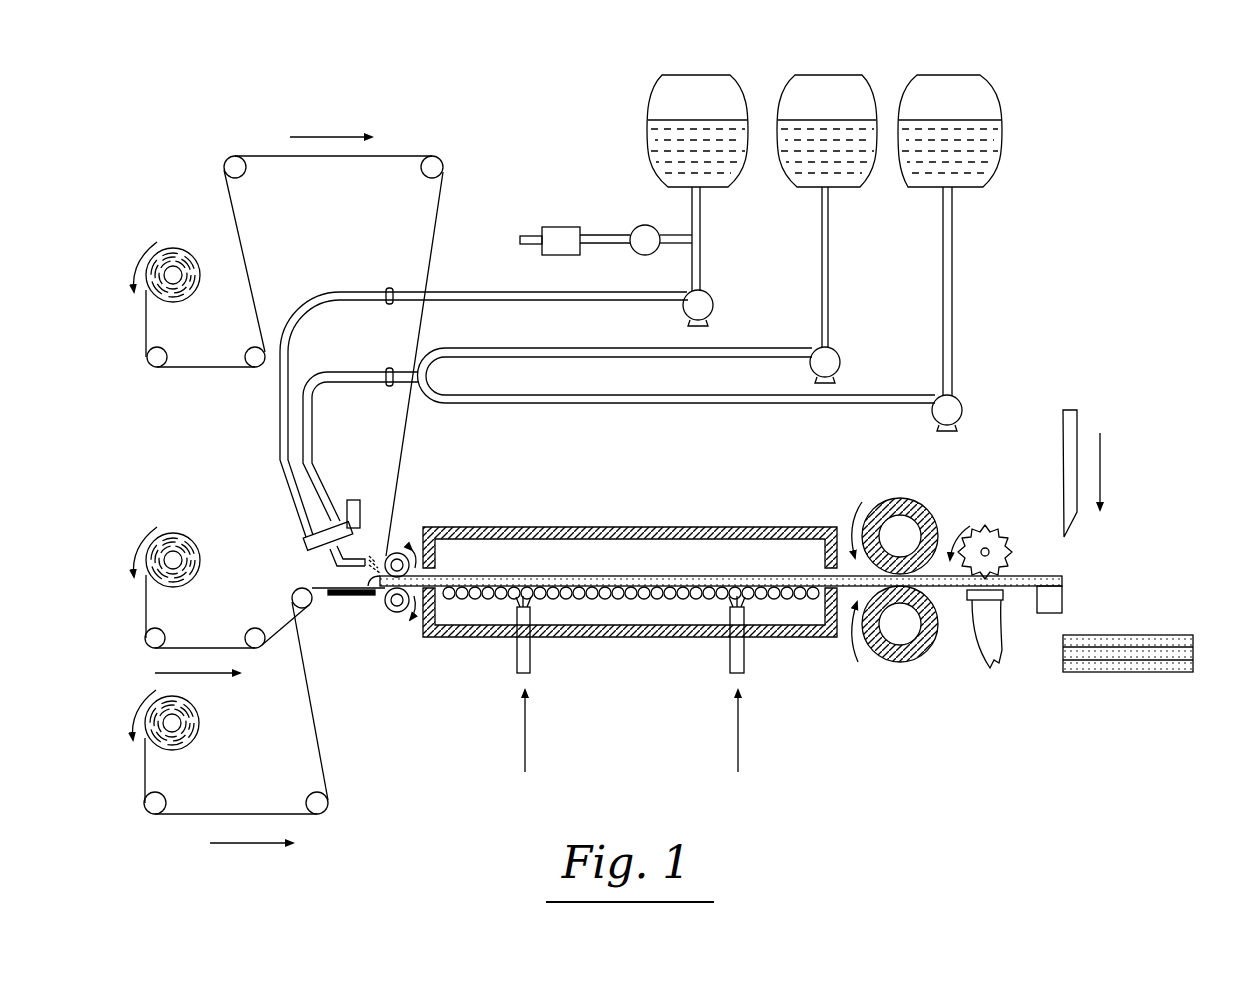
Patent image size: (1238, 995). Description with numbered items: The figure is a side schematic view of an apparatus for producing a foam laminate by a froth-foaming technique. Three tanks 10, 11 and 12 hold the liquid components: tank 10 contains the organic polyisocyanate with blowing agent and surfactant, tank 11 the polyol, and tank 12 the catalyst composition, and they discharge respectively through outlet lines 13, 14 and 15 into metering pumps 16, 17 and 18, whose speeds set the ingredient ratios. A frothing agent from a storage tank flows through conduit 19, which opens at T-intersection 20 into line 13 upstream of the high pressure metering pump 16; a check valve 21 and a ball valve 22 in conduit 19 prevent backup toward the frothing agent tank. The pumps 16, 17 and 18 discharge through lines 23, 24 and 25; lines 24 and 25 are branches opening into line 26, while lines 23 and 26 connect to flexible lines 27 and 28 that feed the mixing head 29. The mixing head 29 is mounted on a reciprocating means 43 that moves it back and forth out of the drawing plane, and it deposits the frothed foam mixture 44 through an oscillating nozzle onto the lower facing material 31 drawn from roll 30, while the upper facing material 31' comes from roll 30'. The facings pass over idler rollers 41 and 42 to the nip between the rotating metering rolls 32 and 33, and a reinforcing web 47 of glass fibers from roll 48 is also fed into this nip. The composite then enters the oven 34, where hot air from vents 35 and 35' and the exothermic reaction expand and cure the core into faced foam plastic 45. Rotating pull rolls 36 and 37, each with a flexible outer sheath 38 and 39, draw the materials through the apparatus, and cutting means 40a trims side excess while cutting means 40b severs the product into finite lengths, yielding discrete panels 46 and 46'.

The tank 10 is at (683, 77).
The tank 11 is at (828, 78).
The tank 12 is at (965, 78).
The outlet line 13 is at (701, 215).
The polyol line 14 is at (829, 232).
The outlet line 15 is at (953, 255).
The metering pump 16 is at (708, 306).
The metering pump 17 is at (838, 357).
The metering pump 18 is at (961, 407).
The conduit 19 is at (614, 245).
The T-intersection 20 is at (698, 243).
The check valve 21 is at (562, 226).
The ball valve 22 is at (644, 224).
The line 23 is at (437, 301).
The line 24 is at (548, 362).
The line 25 is at (690, 406).
The line 26 is at (430, 374).
The flexible line 27 is at (338, 292).
The flexible line 28 is at (325, 386).
The mixing head 29 is at (302, 535).
The roll of lower facing material 30 is at (190, 720).
The roll of upper facing material 30' is at (199, 304).
The lower facing material 31 is at (236, 722).
The upper facing material 31' is at (347, 346).
The metering roll 32 is at (388, 612).
The metering roll 33 is at (403, 551).
The oven 34 is at (606, 527).
The vent 35 is at (550, 684).
The vent 35' is at (767, 684).
The pull roll 36 is at (900, 632).
The pull roll 37 is at (902, 530).
The flexible outer sheath 38 is at (910, 650).
The flexible outer sheath 39 is at (883, 492).
The cutting means 40a is at (987, 524).
The cutting means 40b is at (1076, 522).
The idler roller 41 is at (158, 795).
The idler roller 42 is at (325, 810).
The reciprocating means 43 is at (356, 500).
The frothed foam mixture 44 is at (376, 586).
The faced foam plastic 45 is at (836, 556).
The discrete panel 46 is at (1128, 627).
The discrete panel 46' is at (1128, 690).
The reinforcing web 47 is at (180, 648).
The roll 48 is at (176, 534).